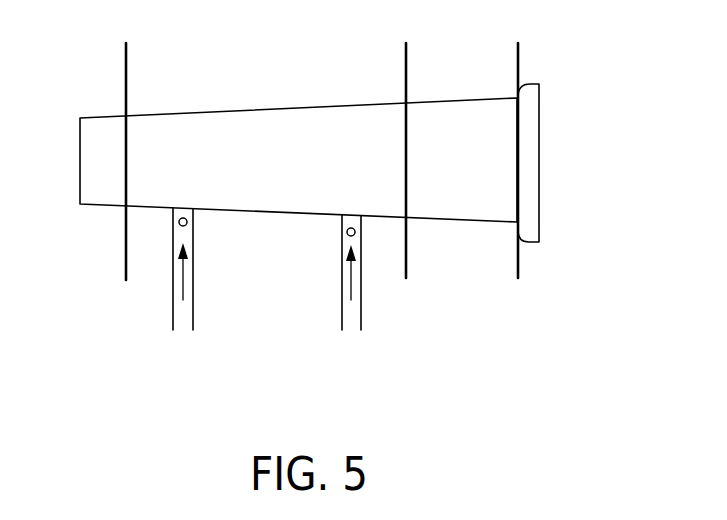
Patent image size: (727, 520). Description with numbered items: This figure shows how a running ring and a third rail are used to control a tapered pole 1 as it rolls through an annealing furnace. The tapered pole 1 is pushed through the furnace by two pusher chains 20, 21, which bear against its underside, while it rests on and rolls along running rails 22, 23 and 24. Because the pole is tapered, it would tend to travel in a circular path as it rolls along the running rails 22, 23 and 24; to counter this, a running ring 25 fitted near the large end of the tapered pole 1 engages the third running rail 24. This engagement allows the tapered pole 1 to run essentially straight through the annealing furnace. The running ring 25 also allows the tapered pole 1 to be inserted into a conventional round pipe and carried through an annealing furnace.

The tapered pole 1 is at (242, 100).
The pusher chain 20 is at (173, 317).
The pusher chain 21 is at (342, 317).
The running rail 22 is at (125, 75).
The running rail 23 is at (405, 75).
The third running rail 24 is at (517, 75).
The running ring 25 is at (530, 232).